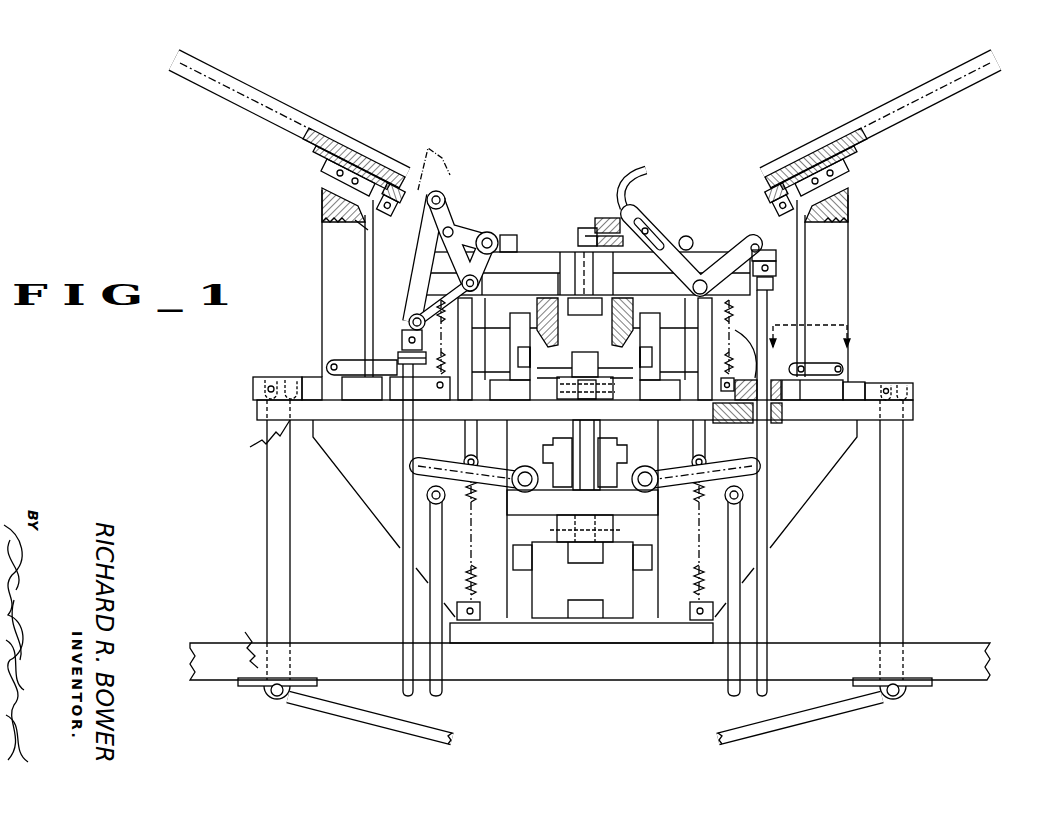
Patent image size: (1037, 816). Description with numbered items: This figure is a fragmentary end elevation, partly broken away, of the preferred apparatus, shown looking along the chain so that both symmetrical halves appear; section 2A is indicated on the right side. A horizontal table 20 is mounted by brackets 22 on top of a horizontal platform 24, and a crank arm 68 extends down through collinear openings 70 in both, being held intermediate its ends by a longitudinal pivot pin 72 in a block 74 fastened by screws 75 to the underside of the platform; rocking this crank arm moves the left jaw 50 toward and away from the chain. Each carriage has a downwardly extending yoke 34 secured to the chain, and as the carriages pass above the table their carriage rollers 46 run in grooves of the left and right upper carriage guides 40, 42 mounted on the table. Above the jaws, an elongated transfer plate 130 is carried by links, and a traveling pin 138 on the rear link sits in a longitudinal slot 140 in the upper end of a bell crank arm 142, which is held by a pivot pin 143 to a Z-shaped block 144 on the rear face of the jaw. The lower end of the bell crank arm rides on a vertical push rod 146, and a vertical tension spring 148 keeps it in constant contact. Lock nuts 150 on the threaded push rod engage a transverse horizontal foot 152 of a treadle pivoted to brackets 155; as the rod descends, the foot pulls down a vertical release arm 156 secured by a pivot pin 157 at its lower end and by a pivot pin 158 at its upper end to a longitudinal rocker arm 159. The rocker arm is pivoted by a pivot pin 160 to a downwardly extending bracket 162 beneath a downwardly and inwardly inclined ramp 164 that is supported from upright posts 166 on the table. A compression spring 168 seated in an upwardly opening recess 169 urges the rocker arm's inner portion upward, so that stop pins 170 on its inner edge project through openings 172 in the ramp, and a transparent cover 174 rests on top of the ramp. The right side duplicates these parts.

The horizontal table 20 is at (256, 409).
The brackets 22 is at (363, 493).
The horizontal platform 24 is at (325, 640).
The yoke 34 is at (610, 389).
The left upper carriage guide 40 is at (514, 318).
The right upper carriage guide 42 is at (651, 320).
The carriage rollers 46 is at (518, 364).
The left jaw 50 is at (537, 252).
The crank arm 68 is at (286, 556).
The collinear openings 70 is at (256, 544).
The longitudinal pivot pin 72 is at (277, 700).
The block 74 is at (265, 698).
The screws 75 is at (248, 688).
The transfer plate 130 is at (430, 170).
The traveling pin 138 is at (460, 222).
The longitudinal slot 140 is at (450, 196).
The bell crank arm 142 is at (482, 240).
The pivot pin 143 is at (482, 282).
The Z-shaped block 144 is at (405, 318).
The vertical push rod 146 is at (400, 338).
The vertical tension spring 148 is at (420, 388).
The lock nuts 150 is at (398, 360).
The transverse horizontal foot 152 is at (392, 383).
The brackets 155 is at (310, 378).
The vertical release arm 156 is at (363, 252).
The pivot pin 157 is at (798, 398).
The pivot pin 158 is at (362, 228).
The longitudinal rocker arm 159 is at (790, 217).
The pivot pin 160 is at (330, 208).
The downwardly extending bracket 162 is at (345, 225).
The ramp 164 is at (246, 110).
The upright posts 166 is at (853, 246).
The compression spring 168 is at (320, 185).
The upwardly opening recess 169 is at (322, 163).
The stop pins 170 is at (395, 185).
The openings 172 is at (382, 170).
The transparent cover 174 is at (236, 79).
The section line 2A is at (810, 344).